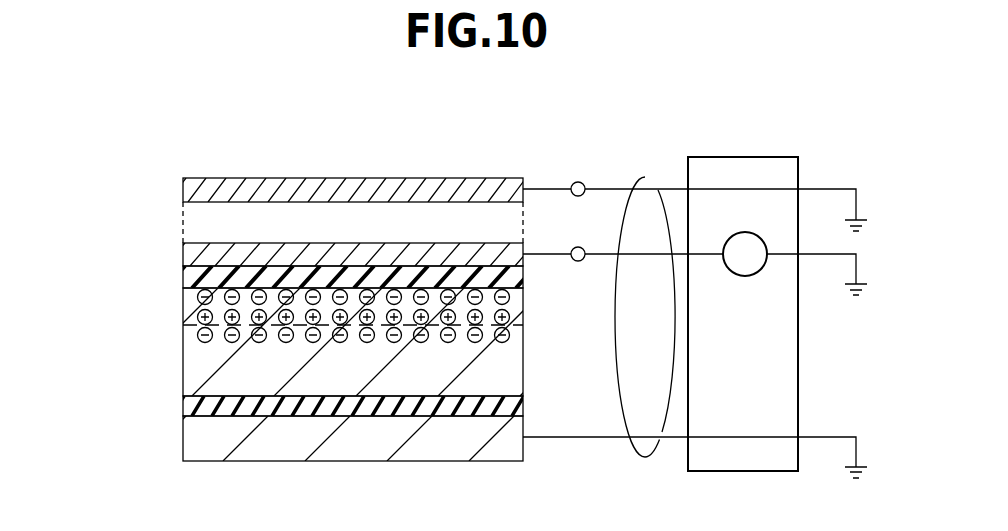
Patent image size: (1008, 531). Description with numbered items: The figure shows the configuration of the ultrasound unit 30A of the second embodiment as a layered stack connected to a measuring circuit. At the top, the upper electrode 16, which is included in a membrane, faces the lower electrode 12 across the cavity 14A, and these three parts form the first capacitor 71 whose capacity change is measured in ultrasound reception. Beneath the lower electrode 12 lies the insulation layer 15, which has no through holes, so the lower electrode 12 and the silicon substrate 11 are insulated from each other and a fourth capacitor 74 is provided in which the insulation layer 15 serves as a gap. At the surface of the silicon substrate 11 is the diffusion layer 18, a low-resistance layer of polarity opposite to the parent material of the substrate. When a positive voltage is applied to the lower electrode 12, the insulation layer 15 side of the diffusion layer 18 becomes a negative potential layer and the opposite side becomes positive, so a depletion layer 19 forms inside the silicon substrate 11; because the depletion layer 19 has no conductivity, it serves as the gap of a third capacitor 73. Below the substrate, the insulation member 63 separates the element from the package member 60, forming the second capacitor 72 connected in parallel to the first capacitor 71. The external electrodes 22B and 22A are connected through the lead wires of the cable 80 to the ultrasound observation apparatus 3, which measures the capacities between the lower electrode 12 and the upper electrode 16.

The ultrasound unit 30A is at (401, 146).
The first capacitor 71 is at (103, 170).
The upper electrode 16 is at (182, 193).
The cavity 14A is at (200, 224).
The lower electrode 12 is at (182, 256).
The insulation layer 15 is at (182, 277).
The diffusion layer 18 is at (182, 310).
The silicon substrate 11 is at (182, 355).
The second capacitor 72 is at (103, 343).
The insulation member 63 is at (182, 398).
The package member 60 is at (182, 447).
The external electrode 22B is at (579, 182).
The external electrode 22A is at (579, 247).
The cable 80 is at (643, 177).
The ultrasound observation apparatus 3 is at (745, 157).
The fourth capacitor 74 is at (527, 258).
The depletion layer 19 is at (527, 350).
The third capacitor 73 is at (386, 322).